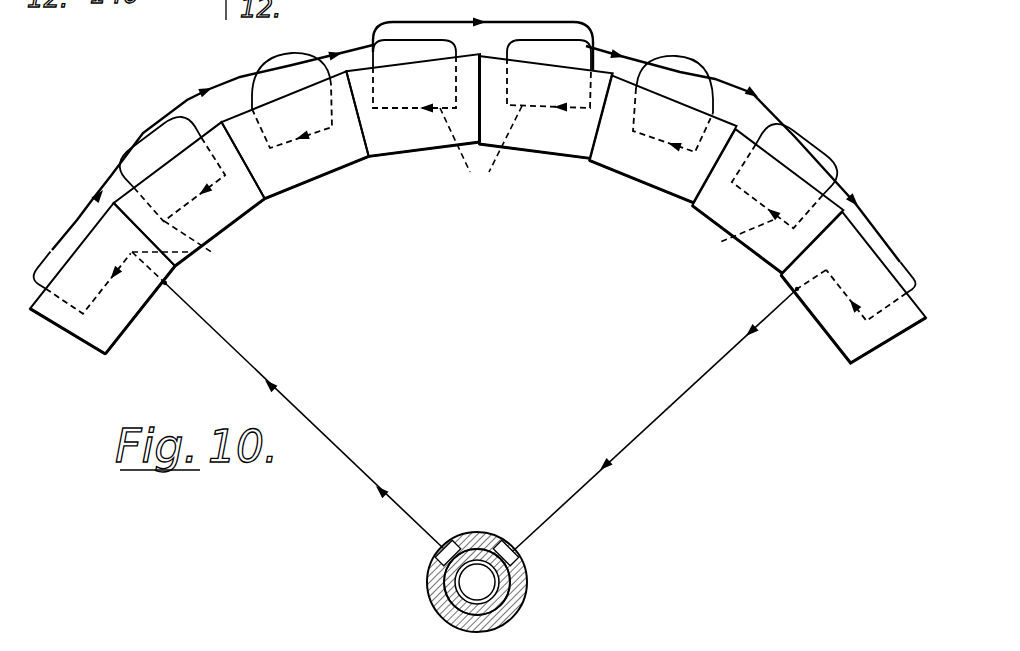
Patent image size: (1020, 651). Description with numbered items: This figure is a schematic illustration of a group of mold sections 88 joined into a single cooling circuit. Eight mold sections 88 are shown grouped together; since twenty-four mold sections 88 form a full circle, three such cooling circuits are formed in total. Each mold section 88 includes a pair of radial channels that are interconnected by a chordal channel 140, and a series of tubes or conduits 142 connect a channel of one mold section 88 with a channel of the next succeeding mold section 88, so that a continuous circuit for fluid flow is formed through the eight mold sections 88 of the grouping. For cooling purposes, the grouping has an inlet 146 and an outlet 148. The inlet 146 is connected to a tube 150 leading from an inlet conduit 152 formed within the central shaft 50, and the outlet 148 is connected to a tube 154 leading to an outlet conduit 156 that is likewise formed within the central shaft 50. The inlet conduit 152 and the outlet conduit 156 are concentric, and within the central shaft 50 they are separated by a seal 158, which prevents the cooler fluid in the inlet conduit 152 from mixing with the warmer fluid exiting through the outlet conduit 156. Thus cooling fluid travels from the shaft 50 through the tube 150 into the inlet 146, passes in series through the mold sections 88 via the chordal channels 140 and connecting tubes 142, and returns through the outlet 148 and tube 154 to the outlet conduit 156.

The central shaft 50 is at (471, 556).
The mold section 88 is at (303, 175).
The chordal channel 140 is at (479, 197).
The tubes or conduits 142 is at (128, 150).
The inlet 146 is at (167, 283).
The outlet 148 is at (797, 291).
The tube 150 is at (318, 422).
The inlet conduit 152 is at (470, 578).
The tube 154 is at (658, 401).
The outlet conduit 156 is at (508, 592).
The seal 158 is at (456, 592).